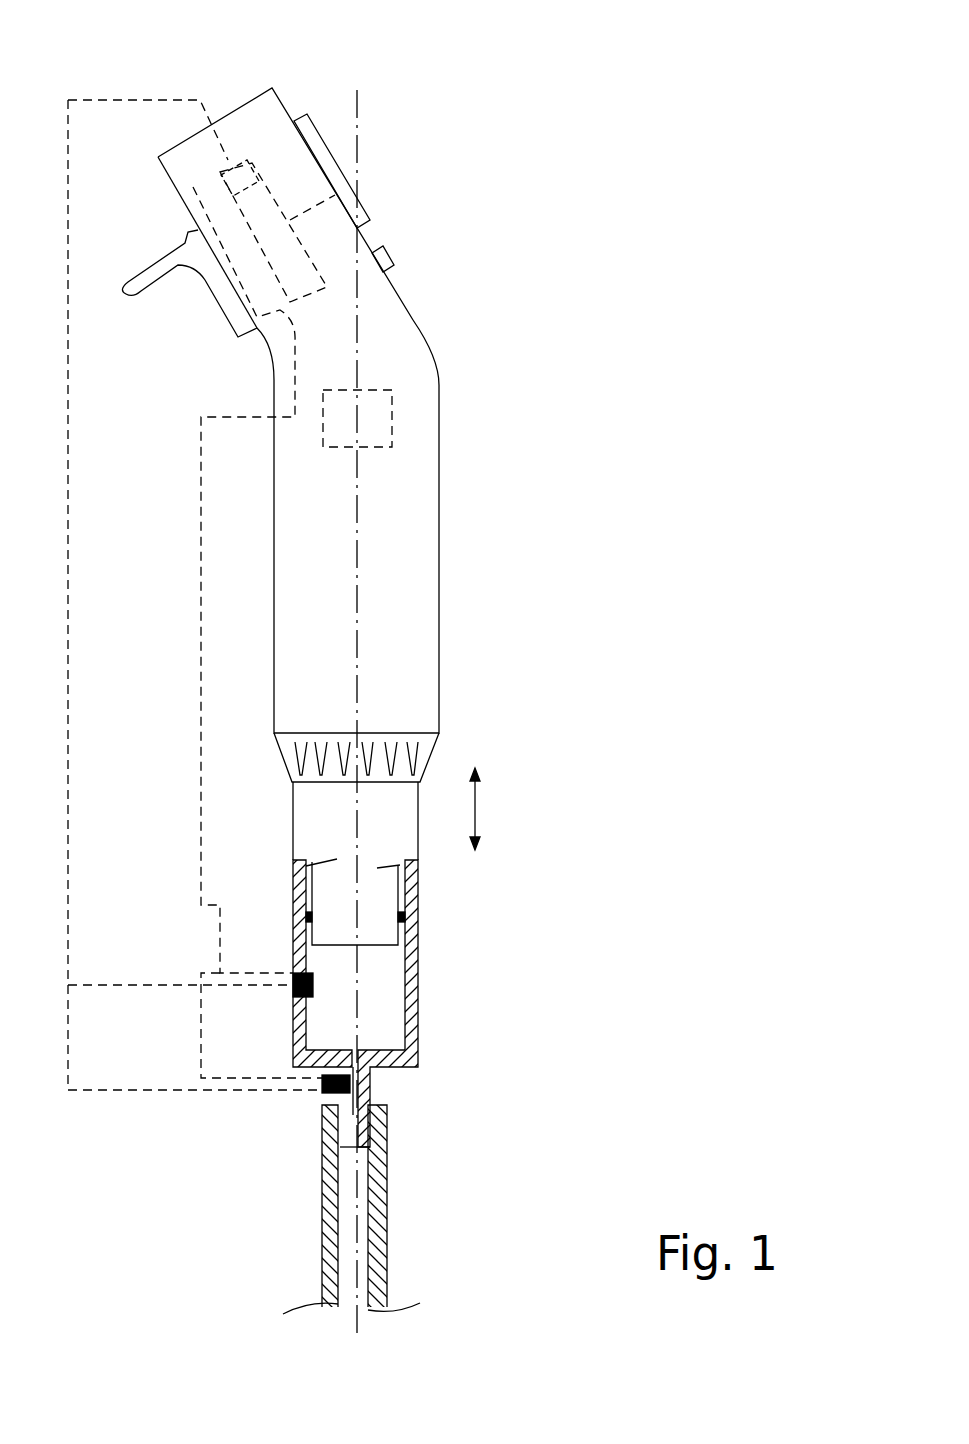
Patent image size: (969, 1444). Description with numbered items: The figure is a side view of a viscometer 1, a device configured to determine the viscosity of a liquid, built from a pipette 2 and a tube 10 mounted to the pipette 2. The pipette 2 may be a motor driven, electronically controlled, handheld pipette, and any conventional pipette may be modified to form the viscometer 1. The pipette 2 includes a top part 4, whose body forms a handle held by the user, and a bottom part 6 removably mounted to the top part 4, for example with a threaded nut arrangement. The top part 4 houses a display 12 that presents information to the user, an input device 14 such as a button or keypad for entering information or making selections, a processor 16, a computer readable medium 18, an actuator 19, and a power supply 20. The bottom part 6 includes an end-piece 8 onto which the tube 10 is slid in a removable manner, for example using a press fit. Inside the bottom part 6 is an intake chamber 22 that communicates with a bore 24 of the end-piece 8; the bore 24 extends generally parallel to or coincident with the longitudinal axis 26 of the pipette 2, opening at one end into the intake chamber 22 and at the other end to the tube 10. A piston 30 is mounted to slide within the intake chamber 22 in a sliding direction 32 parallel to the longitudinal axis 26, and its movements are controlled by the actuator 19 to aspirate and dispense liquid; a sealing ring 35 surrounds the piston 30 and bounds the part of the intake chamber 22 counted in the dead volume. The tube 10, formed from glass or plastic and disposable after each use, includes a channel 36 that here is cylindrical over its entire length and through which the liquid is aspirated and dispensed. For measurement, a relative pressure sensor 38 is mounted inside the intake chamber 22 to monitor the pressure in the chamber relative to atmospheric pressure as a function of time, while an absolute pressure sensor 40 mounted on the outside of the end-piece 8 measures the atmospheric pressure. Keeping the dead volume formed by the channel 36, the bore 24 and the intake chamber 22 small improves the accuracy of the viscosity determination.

The viscometer 1 is at (467, 73).
The pipette 2 is at (530, 297).
The top part 4 is at (440, 562).
The bottom part 6 is at (423, 938).
The end-piece 8 is at (373, 1085).
The tube 10 is at (387, 1240).
The display 12 is at (332, 153).
The input device 14 is at (396, 256).
The processor 16 is at (255, 152).
The computer readable medium 18 is at (200, 193).
The actuator 19 is at (392, 427).
The power supply 20 is at (280, 311).
The intake chamber 22 is at (392, 993).
The bore 24 is at (353, 1163).
The longitudinal axis 26 is at (363, 103).
The piston 30 is at (383, 898).
The sliding direction 32 is at (476, 805).
The sealing ring 35 is at (404, 916).
The channel 36 is at (363, 1190).
The relative pressure sensor 38 is at (292, 945).
The absolute pressure sensor 40 is at (323, 1095).